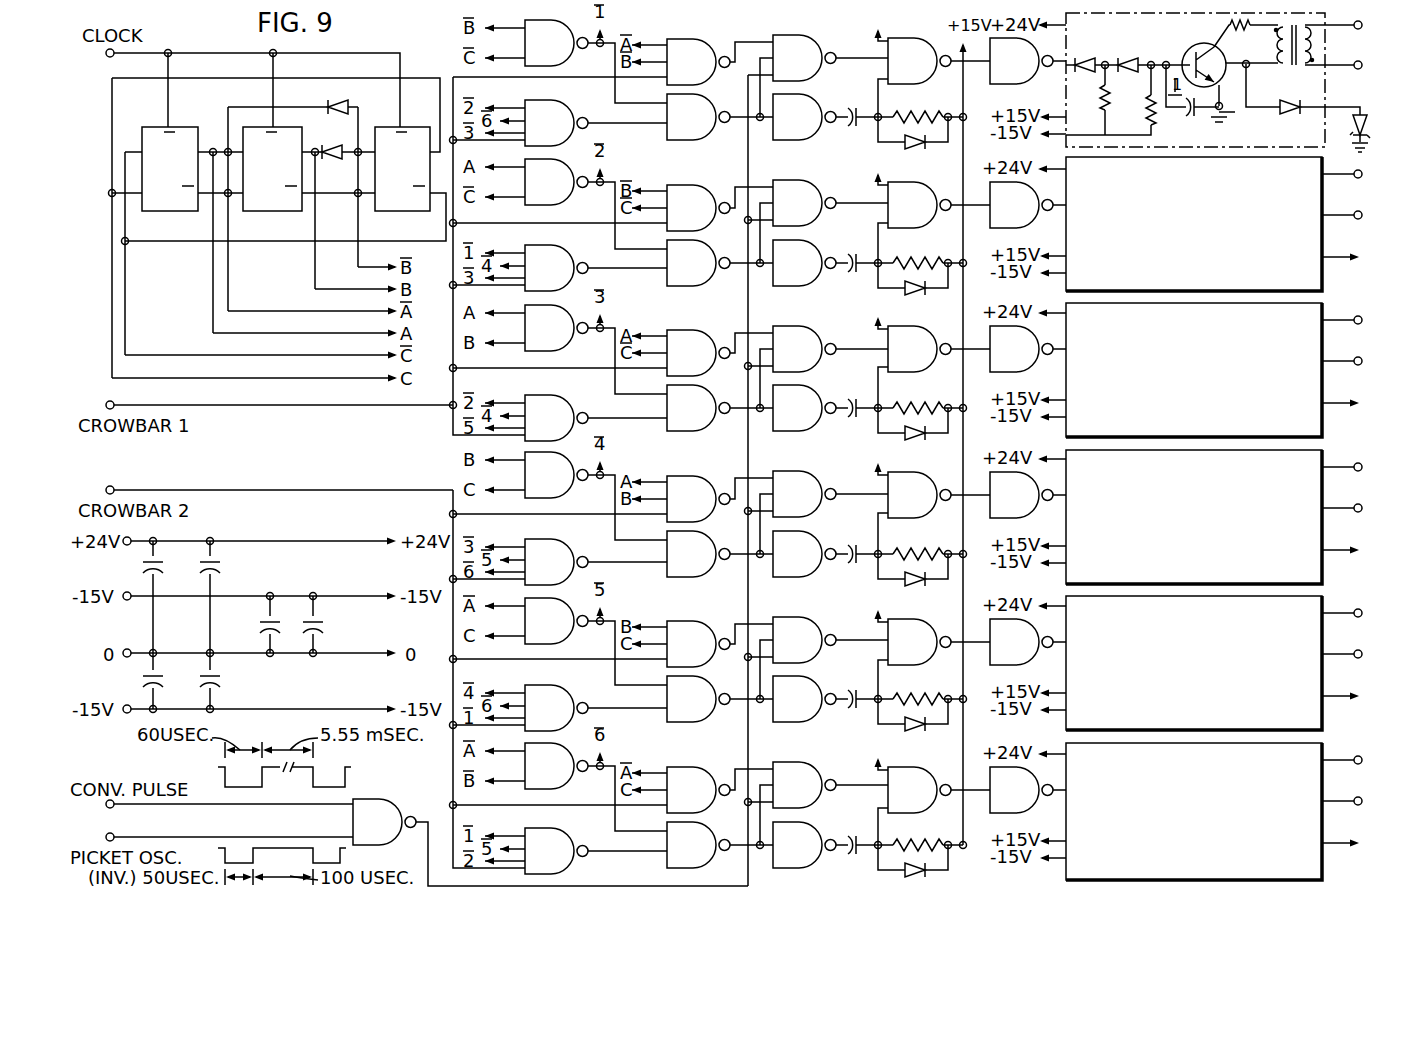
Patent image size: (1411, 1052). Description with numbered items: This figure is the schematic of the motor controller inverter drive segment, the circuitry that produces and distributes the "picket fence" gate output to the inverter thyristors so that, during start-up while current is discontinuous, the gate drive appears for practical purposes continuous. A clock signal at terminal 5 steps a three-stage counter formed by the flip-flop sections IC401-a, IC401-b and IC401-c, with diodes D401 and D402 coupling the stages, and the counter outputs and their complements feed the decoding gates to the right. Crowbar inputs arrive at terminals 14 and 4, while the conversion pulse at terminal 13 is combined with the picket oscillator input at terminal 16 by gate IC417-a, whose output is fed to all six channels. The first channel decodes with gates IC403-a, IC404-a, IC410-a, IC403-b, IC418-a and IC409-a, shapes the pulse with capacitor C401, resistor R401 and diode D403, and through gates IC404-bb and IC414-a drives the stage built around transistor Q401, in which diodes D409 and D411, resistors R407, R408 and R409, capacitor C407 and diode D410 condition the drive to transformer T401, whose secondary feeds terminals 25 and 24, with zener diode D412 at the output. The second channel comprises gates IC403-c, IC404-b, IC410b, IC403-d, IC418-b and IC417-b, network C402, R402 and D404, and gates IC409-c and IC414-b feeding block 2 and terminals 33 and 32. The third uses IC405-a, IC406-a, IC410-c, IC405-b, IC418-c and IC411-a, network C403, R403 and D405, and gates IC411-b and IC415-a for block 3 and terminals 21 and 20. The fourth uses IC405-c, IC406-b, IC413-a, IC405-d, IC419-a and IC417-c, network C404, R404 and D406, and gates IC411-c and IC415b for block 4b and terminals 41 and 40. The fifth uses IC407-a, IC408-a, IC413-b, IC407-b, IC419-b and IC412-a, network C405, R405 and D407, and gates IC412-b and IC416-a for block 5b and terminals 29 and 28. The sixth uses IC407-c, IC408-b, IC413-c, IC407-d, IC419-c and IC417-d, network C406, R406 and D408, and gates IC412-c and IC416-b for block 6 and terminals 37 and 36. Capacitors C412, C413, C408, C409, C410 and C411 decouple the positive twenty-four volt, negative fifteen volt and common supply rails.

The clock input terminal 5 is at (245, 85).
The crowbar 1 input terminal 14 is at (265, 405).
The crowbar 2 input terminal 4 is at (270, 490).
The conversion pulse input terminal 13 is at (218, 806).
The picket oscillator input terminal 16 is at (218, 838).
The output terminal 25 is at (1372, 25).
The output terminal 24 is at (1372, 65).
The output terminal 33 is at (1356, 174).
The output terminal 32 is at (1356, 215).
The output terminal 21 is at (1356, 320).
The output terminal 20 is at (1356, 361).
The output terminal 41 is at (1356, 467).
The output terminal 40 is at (1356, 508).
The output terminal 29 is at (1356, 613).
The output terminal 28 is at (1356, 654).
The output terminal 37 is at (1356, 760).
The output terminal 36 is at (1356, 801).
The driver circuit block 2 is at (1200, 236).
The driver circuit block 3 is at (1200, 382).
The driver circuit block 4 4b is at (1200, 529).
The driver circuit block 5 5b is at (1200, 675).
The driver circuit block 6 is at (1200, 822).
The MC663 integrated circuit section IC401-a is at (196, 212).
The MC663 integrated circuit section IC401-b is at (300, 212).
The MC663 integrated circuit section IC401-c is at (428, 212).
The 1N4148 diode D401 is at (337, 104).
The 1N4148 diode D402 is at (331, 159).
The MC668 integrated circuit section IC403-a is at (568, 22).
The MC671 integrated circuit section IC404-a is at (571, 102).
The MC670 integrated circuit section IC410-a is at (712, 39).
The MC668 integrated circuit section IC403-b is at (718, 150).
The MC670 integrated circuit section IC418-a is at (814, 35).
The MC670 integrated circuit section IC409-a is at (826, 150).
The MC671 integrated circuit section IC404-bb is at (934, 35).
The NAND gate IC414-a is at (1046, 94).
The 0.015 microfarad capacitor C401 is at (856, 106).
The 15 kilohm resistor R401 is at (915, 102).
The 1N4148 diode D403 is at (903, 145).
The MC668 integrated circuit section IC403-c is at (576, 216).
The MC671 integrated circuit section IC404-b is at (571, 247).
The MC670 integrated circuit section IC410b is at (712, 184).
The MC668 integrated circuit section IC403-d is at (718, 296).
The MC670 integrated circuit section IC418-b is at (819, 180).
The MC668 integrated circuit section IC417-b is at (826, 296).
The MC670 integrated circuit section IC409-c is at (934, 180).
The NAND gate IC414-b is at (1046, 238).
The 0.015 microfarad capacitor C402 is at (856, 252).
The 15 kilohm resistor R402 is at (915, 248).
The 1N4148 diode D404 is at (903, 291).
The MC668 integrated circuit section IC405-a is at (576, 362).
The MC671 integrated circuit section IC406-a is at (571, 397).
The MC670 integrated circuit section IC410-c is at (712, 329).
The MC668 integrated circuit section IC405-b is at (718, 441).
The MC670 integrated circuit section IC418-c is at (819, 325).
The MC670 integrated circuit section IC411-a is at (826, 441).
The MC670 integrated circuit section IC411-b is at (934, 323).
The NAND gate IC415-a is at (1046, 382).
The 0.015 microfarad capacitor C403 is at (856, 397).
The 15 kilohm resistor R403 is at (915, 393).
The 1N4148 diode D405 is at (903, 436).
The MC668 integrated circuit section IC405-c is at (576, 509).
The MC671 integrated circuit section IC406-b is at (571, 541).
The MC670 integrated circuit section IC413-a is at (712, 475).
The MC668 integrated circuit section IC405-d is at (718, 587).
The MC670 integrated circuit section IC419-a is at (819, 470).
The MC668 integrated circuit section IC417-c is at (826, 587).
The MC670 integrated circuit section IC411-c is at (934, 469).
The NAND gate IC415b is at (1046, 528).
The 0.015 microfarad capacitor C404 is at (856, 543).
The 15 kilohm resistor R404 is at (915, 539).
The 1N4148 diode D406 is at (903, 582).
The MC668 integrated circuit section IC407-a is at (576, 655).
The MC671 integrated circuit section IC408-a is at (571, 687).
The MC670 integrated circuit section IC413-b is at (712, 620).
The MC668 integrated circuit section IC407-b is at (718, 732).
The MC670 integrated circuit section IC419-b is at (819, 616).
The MC670 integrated circuit section IC412-a is at (826, 732).
The MC670 integrated circuit section IC412-b is at (934, 616).
The NAND gate IC416-a is at (1046, 675).
The 0.015 microfarad capacitor C405 is at (856, 688).
The 15 kilohm resistor R405 is at (915, 684).
The 1N4148 diode D407 is at (903, 727).
The MC668 integrated circuit section IC407-c is at (576, 800).
The MC671 integrated circuit section IC408-b is at (571, 830).
The MC670 integrated circuit section IC413-c is at (712, 766).
The MC668 integrated circuit section IC407-d is at (670, 870).
The MC670 integrated circuit section IC419-c is at (819, 761).
The MC668 integrated circuit section IC417-d is at (826, 878).
The MC670 integrated circuit section IC412-c is at (934, 764).
The NAND gate IC416-b is at (1021, 790).
The 0.015 microfarad capacitor C406 is at (856, 834).
The 15 kilohm resistor R406 is at (915, 830).
The 1N4148 diode D408 is at (903, 873).
The MC668 integrated circuit section IC417-a is at (395, 795).
The 1 microfarad capacitor C412 is at (175, 557).
The capacitor C413 is at (232, 557).
The 1 microfarad capacitor C408 is at (254, 626).
The 0.1 microfarad capacitor C409 is at (342, 620).
The 1 microfarad capacitor C410 is at (174, 670).
The 0.1 microfarad capacitor C411 is at (232, 670).
The 1N4148 diode D409 is at (1080, 48).
The 1N748 zener diode D411 is at (1130, 52).
The 2N2405 transistor Q401 is at (1199, 55).
The 100 ohm resistor R408 is at (1241, 37).
The transformer T401 is at (1296, 70).
The 470 ohm resistor R407 is at (1111, 109).
The 15 kilohm resistor R409 is at (1170, 128).
The 0.0027 microfarad capacitor C407 is at (1200, 118).
The 1N645 diode D410 is at (1295, 115).
The 1N3041 zener diode D412 is at (1372, 117).